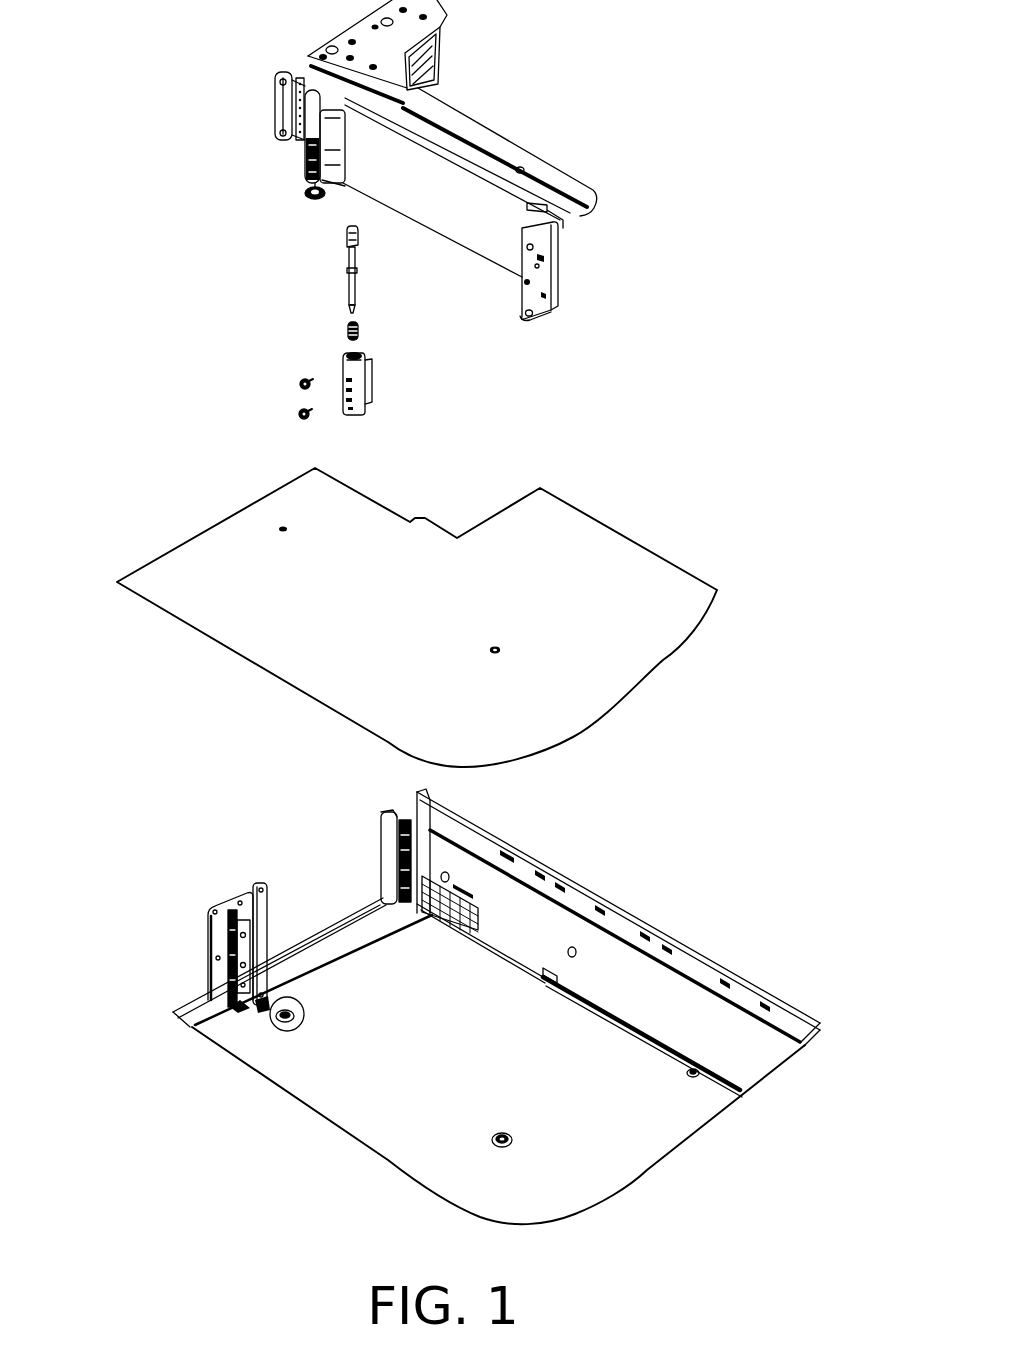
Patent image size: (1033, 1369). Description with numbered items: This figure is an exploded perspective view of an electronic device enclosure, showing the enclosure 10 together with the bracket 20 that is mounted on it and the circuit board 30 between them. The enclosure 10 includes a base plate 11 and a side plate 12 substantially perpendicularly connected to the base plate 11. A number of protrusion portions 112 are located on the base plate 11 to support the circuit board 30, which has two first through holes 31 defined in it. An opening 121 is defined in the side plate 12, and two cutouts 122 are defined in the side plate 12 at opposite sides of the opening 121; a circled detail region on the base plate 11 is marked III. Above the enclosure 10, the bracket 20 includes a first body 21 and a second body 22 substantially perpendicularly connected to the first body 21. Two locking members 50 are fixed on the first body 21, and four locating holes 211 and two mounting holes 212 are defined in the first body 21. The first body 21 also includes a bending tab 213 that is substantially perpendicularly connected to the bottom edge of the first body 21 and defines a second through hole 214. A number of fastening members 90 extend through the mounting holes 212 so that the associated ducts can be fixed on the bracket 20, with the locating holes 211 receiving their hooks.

The enclosure 10 is at (474, 1003).
The base plate 11 is at (470, 1120).
The side plate 12 is at (199, 918).
The opening 121 is at (327, 865).
The cutouts 122 is at (252, 888).
The protrusion portions 112 is at (490, 1143).
The section III indicator III is at (271, 1024).
The bracket 20 is at (498, 184).
The first body 21 is at (477, 233).
The second body 22 is at (442, 47).
The locating holes 211 is at (549, 295).
The mounting holes 212 is at (523, 250).
The bending tab 213 is at (542, 317).
The second through hole 214 is at (522, 313).
The circuit board 30 is at (417, 617).
The first through holes 31 is at (499, 650).
The locking members 50 is at (315, 318).
The fastening members 90 is at (295, 385).